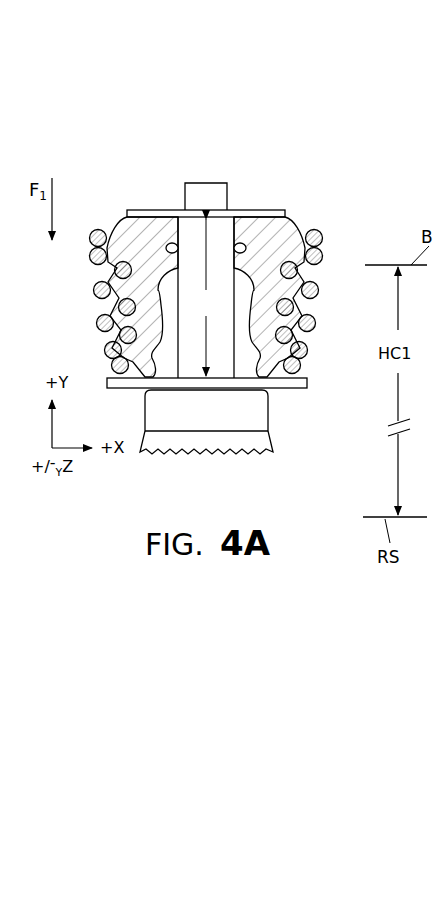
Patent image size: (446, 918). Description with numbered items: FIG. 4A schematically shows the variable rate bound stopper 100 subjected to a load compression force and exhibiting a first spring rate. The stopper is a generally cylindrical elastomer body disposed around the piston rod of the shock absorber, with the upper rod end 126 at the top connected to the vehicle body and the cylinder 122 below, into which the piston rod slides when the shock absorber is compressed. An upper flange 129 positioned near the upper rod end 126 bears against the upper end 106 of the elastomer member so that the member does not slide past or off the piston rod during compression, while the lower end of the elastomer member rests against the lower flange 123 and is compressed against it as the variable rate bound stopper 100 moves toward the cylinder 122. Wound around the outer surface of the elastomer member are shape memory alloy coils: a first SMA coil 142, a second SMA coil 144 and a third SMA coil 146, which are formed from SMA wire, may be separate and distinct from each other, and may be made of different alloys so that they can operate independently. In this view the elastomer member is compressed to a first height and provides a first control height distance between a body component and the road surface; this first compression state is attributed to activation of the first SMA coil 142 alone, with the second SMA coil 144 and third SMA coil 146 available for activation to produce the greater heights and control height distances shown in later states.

The variable rate bound stopper 100 is at (235, 284).
The upper end 106 is at (260, 210).
The cylinder 122 is at (273, 443).
The lower flange 123 is at (307, 383).
The upper rod end 126 is at (212, 183).
The upper flange 129 is at (150, 210).
The first SMA coil 142 is at (321, 230).
The second SMA coil 144 is at (322, 253).
The third SMA coil 146 is at (318, 288).